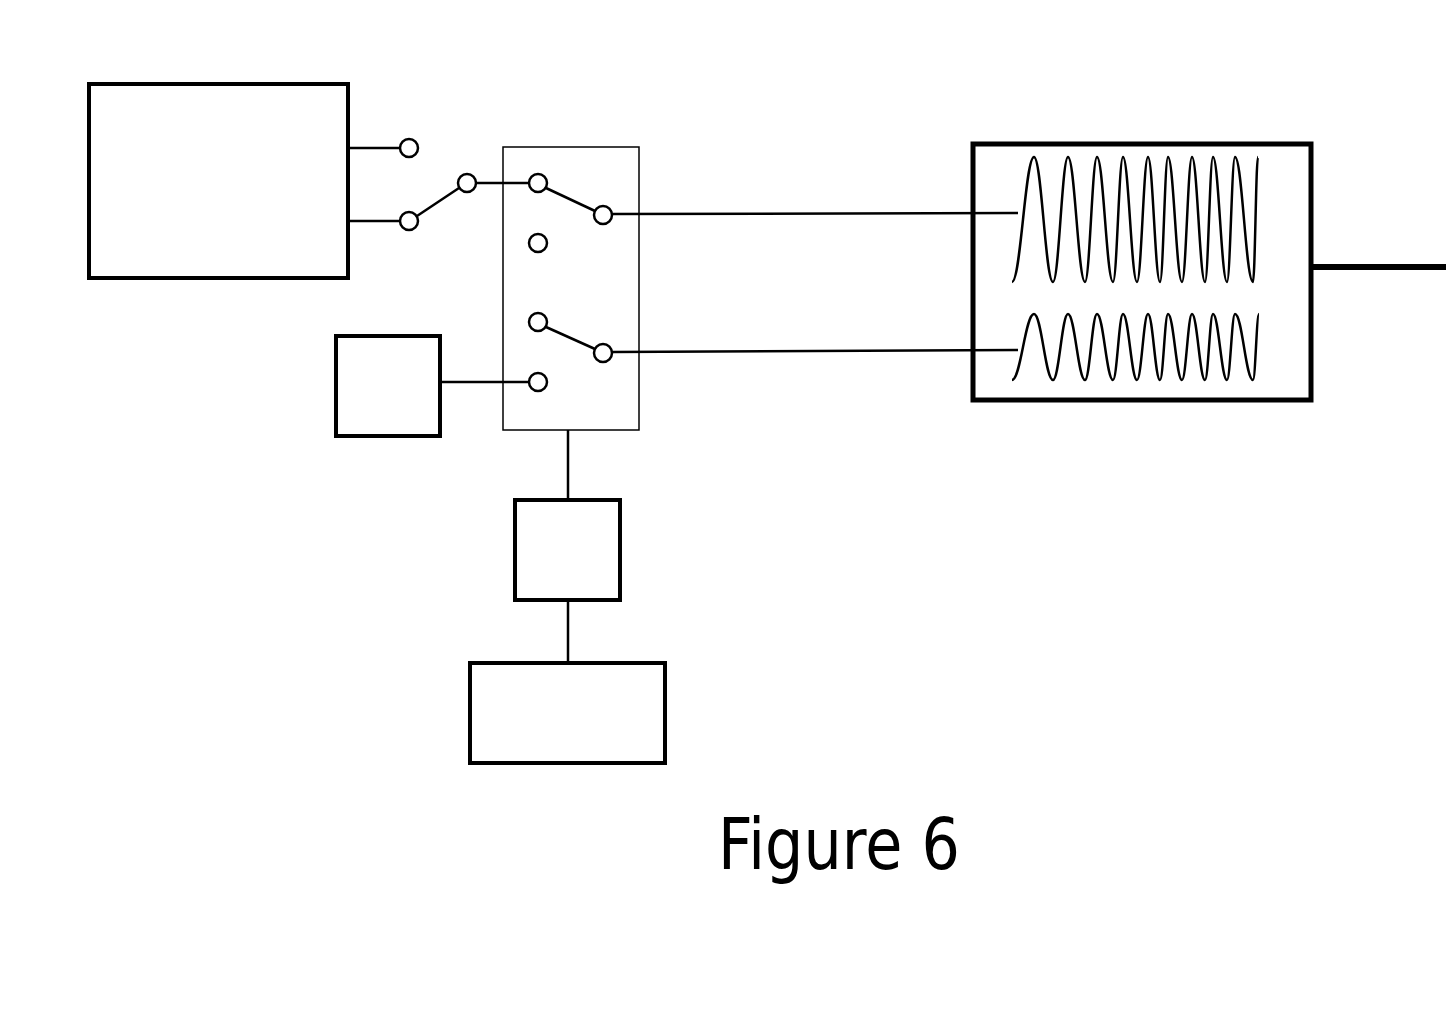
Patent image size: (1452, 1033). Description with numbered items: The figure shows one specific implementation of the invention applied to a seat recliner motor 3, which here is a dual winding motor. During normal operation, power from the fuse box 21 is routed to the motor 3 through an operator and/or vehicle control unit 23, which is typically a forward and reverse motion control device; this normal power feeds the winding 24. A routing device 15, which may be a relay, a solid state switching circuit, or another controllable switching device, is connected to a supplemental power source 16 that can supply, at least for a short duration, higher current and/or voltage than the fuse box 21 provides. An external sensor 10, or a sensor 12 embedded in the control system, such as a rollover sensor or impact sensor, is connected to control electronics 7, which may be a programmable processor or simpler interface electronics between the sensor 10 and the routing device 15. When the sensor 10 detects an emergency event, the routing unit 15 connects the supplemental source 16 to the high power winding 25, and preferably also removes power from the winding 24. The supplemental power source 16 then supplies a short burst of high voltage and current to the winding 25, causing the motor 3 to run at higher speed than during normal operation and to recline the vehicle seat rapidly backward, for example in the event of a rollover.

The fuse box 21 is at (218, 181).
The vehicle control unit 23 is at (423, 132).
The routing device 15 is at (627, 185).
The supplemental power source 16 is at (432, 386).
The control electronics 7 is at (567, 581).
The external sensor 10 is at (567, 713).
The embedded sensor 12 is at (567, 713).
The seat recliner motor 3 is at (1081, 420).
The winding 24 is at (1148, 162).
The high power winding 25 is at (1257, 367).